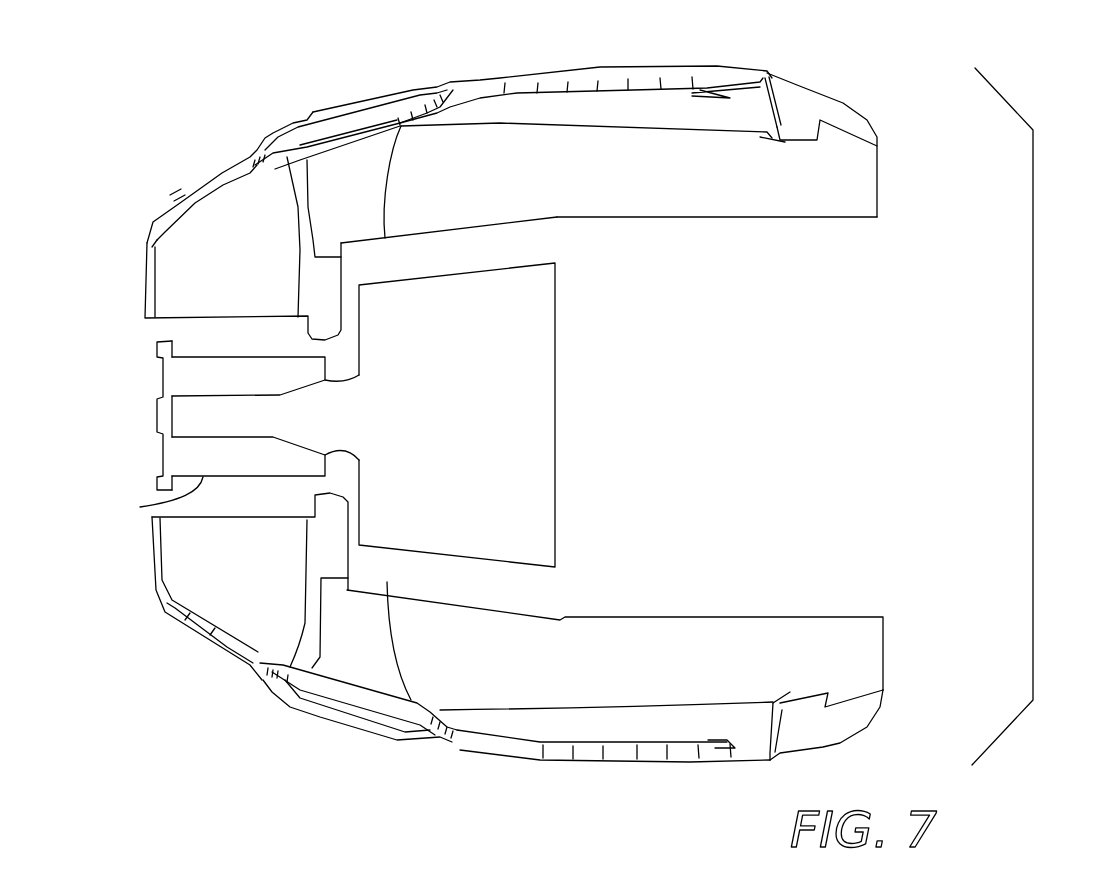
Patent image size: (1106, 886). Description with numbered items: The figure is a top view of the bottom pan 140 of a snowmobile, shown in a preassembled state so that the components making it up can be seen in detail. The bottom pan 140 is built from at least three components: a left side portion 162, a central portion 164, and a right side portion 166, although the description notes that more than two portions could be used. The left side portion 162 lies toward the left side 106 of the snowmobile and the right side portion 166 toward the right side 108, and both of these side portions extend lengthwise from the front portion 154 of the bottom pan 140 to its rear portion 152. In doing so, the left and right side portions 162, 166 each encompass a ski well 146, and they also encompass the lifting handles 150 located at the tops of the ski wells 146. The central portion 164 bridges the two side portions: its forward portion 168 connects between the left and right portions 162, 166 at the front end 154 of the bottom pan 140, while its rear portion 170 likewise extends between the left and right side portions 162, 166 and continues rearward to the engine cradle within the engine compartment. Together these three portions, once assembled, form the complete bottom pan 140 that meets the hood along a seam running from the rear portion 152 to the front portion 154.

The left side 106 is at (530, 766).
The right side 108 is at (633, 66).
The bottom pan 140 is at (1034, 406).
The ski well 146 is at (260, 133).
The lifting handle 150 is at (373, 117).
The rear portion 152 is at (878, 158).
The front portion 154 is at (129, 378).
The left side portion 162 is at (732, 640).
The central portion 164 is at (558, 423).
The right side portion 166 is at (733, 200).
The forward portion 168 is at (167, 492).
The rear portion 170 is at (533, 285).